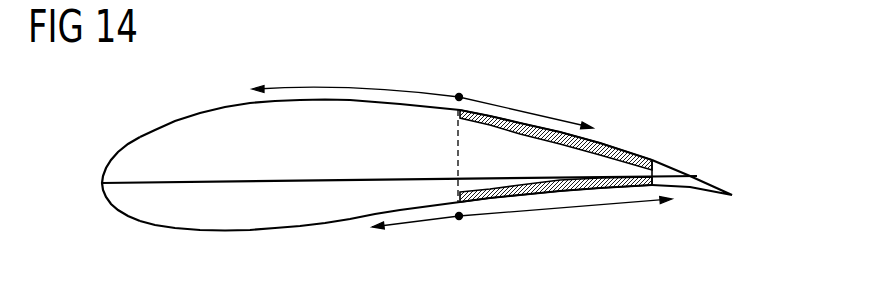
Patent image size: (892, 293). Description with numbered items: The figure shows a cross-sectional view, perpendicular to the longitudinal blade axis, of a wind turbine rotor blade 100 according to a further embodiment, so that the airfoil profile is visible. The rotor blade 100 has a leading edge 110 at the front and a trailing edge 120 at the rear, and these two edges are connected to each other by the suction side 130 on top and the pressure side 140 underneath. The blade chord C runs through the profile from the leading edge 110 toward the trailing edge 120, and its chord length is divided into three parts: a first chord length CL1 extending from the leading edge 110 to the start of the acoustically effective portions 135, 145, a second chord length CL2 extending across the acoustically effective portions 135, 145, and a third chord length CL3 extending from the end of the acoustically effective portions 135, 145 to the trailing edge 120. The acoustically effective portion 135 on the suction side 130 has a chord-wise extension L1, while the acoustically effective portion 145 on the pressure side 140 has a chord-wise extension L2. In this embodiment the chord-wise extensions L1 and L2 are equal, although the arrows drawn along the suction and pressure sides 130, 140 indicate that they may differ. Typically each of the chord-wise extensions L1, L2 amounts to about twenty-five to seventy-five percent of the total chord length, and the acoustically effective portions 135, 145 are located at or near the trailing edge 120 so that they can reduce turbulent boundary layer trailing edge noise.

The wind turbine rotor blade 100 is at (229, 50).
The leading edge 110 is at (101, 195).
The trailing edge 120 is at (732, 195).
The suction side 130 is at (313, 97).
The acoustically effective portion 135 is at (531, 124).
The pressure side 140 is at (276, 228).
The acoustically effective portion 145 is at (529, 196).
The blade chord C is at (278, 176).
The first chord length CL1 is at (383, 156).
The second chord length CL2 is at (517, 157).
The third chord length CL3 is at (667, 173).
The chord-wise extension L1 is at (409, 89).
The chord-wise extension L2 is at (604, 202).